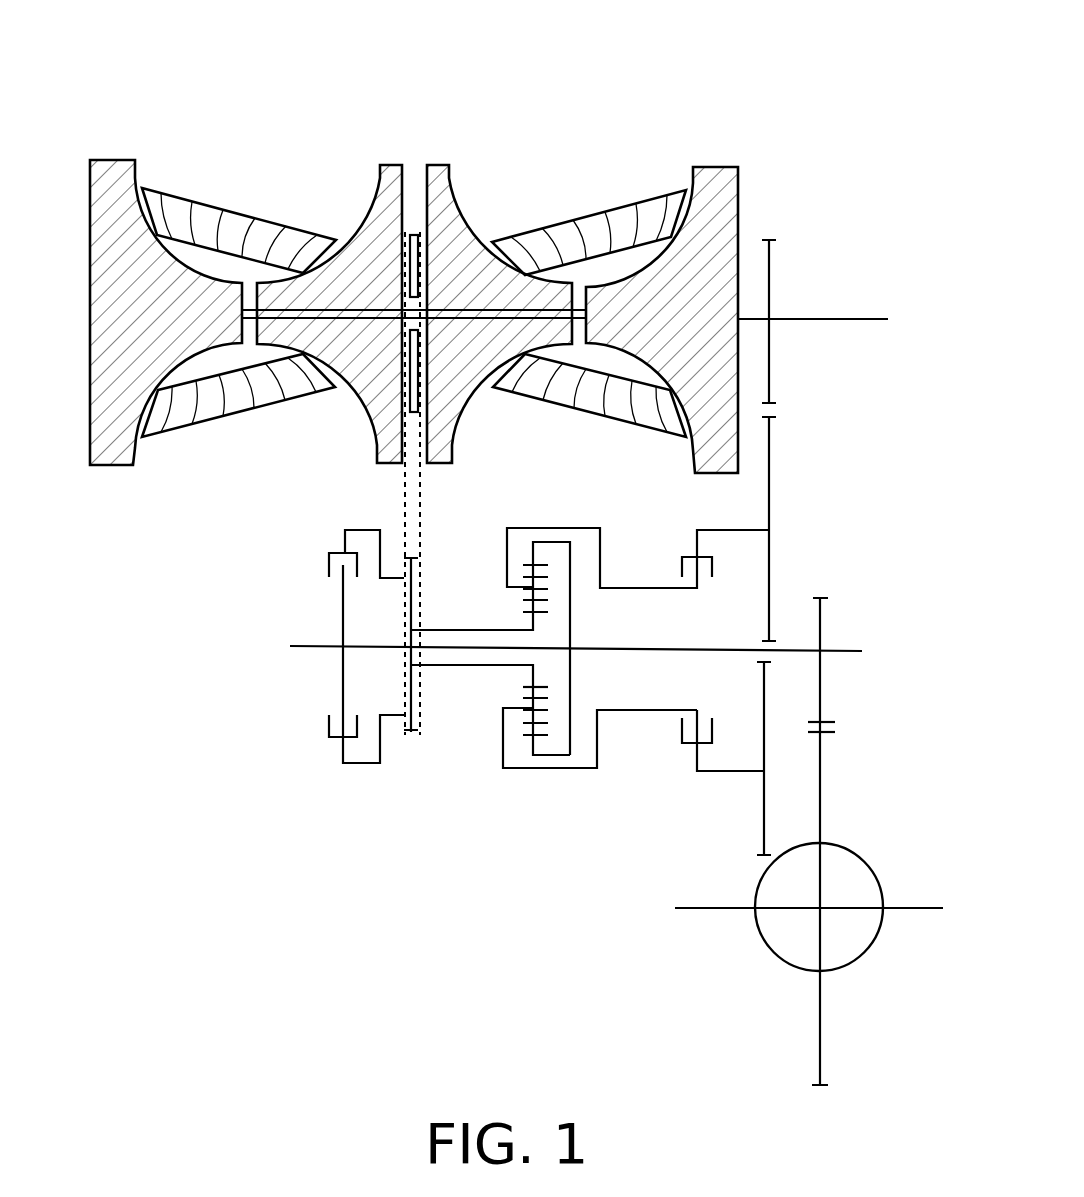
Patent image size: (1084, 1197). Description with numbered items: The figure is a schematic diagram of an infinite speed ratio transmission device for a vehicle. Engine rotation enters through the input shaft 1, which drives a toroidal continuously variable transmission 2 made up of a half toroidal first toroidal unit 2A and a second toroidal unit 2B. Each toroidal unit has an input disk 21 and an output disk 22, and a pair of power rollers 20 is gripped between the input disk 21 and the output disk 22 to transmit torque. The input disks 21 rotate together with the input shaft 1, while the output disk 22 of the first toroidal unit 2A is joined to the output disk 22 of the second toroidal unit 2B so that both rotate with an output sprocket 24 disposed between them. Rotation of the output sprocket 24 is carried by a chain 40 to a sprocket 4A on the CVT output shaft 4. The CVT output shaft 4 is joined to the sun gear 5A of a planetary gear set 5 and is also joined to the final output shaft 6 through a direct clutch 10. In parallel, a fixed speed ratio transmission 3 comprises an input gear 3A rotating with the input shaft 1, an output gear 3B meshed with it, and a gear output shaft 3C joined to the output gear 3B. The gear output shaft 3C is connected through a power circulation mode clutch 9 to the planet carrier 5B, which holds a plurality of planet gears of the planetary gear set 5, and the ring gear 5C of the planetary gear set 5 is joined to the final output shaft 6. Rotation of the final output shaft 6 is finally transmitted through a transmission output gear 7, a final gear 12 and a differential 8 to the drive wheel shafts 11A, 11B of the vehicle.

The input shaft 1 is at (833, 319).
The toroidal continuously variable transmission 2 is at (502, 137).
The first toroidal unit 2A is at (574, 174).
The second toroidal unit 2B is at (257, 177).
The fixed speed ratio transmission 3 is at (873, 375).
The input gear 3A is at (771, 393).
The output gear 3B is at (771, 475).
The gear output shaft 3C is at (718, 773).
The CVT output shaft 4 is at (480, 630).
The sprocket 4A is at (418, 567).
The planetary gear set 5 is at (537, 789).
The sun gear 5A is at (527, 688).
The planet carrier 5B is at (502, 720).
The ring gear 5C is at (520, 733).
The final output shaft 6 is at (787, 652).
The transmission output gear 7 is at (822, 700).
The differential 8 is at (860, 858).
The power circulation mode clutch 9 is at (682, 743).
The direct clutch 10 is at (328, 725).
The drive wheel shaft 11A is at (893, 910).
The drive wheel shaft 11B is at (702, 908).
The final gear 12 is at (822, 747).
The power rollers 20 is at (182, 202).
The input disk 21 is at (113, 175).
The output disk 22 is at (378, 192).
The output sprocket 24 is at (416, 233).
The chain 40 is at (420, 487).